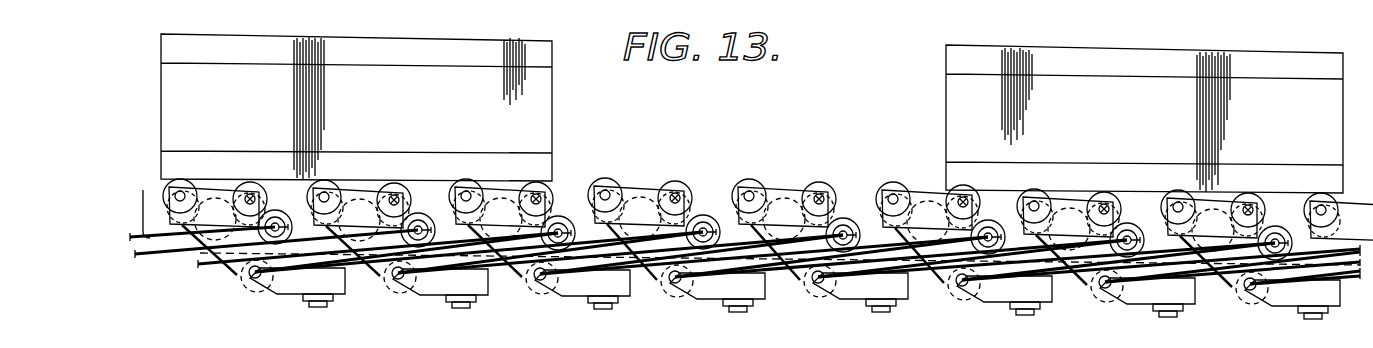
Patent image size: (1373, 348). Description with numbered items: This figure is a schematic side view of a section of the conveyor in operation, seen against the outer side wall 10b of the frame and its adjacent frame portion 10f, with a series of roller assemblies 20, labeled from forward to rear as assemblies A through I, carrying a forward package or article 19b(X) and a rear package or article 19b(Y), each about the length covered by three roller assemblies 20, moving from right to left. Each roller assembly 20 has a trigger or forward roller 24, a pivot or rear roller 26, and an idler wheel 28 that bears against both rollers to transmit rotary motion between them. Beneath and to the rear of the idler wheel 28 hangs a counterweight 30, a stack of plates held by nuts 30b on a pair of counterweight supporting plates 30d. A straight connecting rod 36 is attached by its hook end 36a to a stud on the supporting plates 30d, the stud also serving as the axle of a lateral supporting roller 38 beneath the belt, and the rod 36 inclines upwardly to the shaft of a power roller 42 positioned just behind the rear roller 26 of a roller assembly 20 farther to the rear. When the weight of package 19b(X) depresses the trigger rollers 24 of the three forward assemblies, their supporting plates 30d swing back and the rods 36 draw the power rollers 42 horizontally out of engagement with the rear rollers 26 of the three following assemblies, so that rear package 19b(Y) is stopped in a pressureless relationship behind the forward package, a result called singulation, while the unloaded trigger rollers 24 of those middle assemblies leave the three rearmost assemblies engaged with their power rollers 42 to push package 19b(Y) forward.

The package or article 19b is at (405, 50).
The roller assembly 20 is at (1352, 140).
The trigger or forward roller 24 is at (1328, 196).
The pivot or rear roller 26 is at (1252, 194).
The idler wheel 28 is at (1245, 184).
The power roller 42 is at (1282, 229).
The connecting rod 36 is at (147, 262).
The hook end 36a is at (251, 300).
The lateral supporting roller 38 is at (1243, 322).
The counterweight 30 is at (1303, 334).
The counterweight supporting plate 30d is at (795, 288).
The nut 30b is at (598, 312).
The frame 10f is at (561, 190).
The outer side wall 10b is at (706, 194).